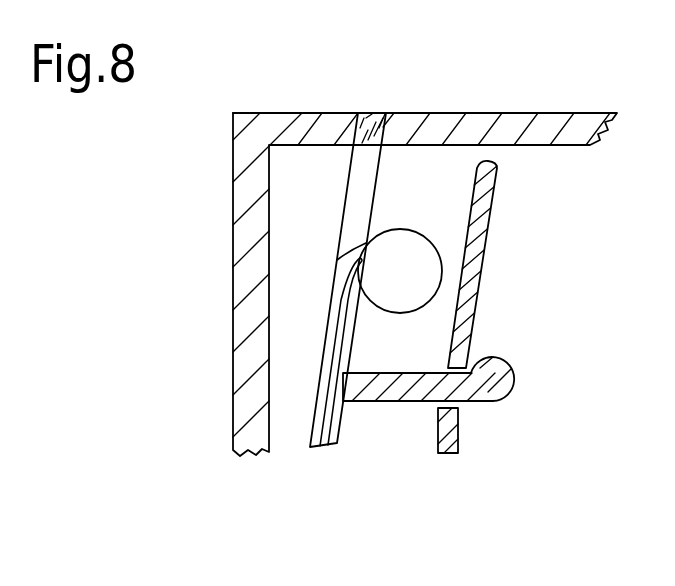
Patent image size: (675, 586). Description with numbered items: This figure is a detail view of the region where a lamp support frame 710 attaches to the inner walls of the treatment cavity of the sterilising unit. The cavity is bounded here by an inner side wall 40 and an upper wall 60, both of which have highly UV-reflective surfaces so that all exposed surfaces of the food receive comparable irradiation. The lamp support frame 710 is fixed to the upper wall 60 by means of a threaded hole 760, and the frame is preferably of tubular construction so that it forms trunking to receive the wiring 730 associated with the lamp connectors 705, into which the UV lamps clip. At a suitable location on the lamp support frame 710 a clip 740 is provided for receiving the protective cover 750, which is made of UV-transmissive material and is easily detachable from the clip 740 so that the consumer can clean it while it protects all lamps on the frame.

The inner side wall 40 is at (270, 418).
The upper wall 60 is at (535, 145).
The lamp connector 705 is at (383, 283).
The lamp support frame 710 is at (323, 345).
The wiring 730 is at (333, 403).
The clip 740 is at (484, 392).
The protective cover 750 is at (473, 285).
The threaded hole 760 is at (362, 130).